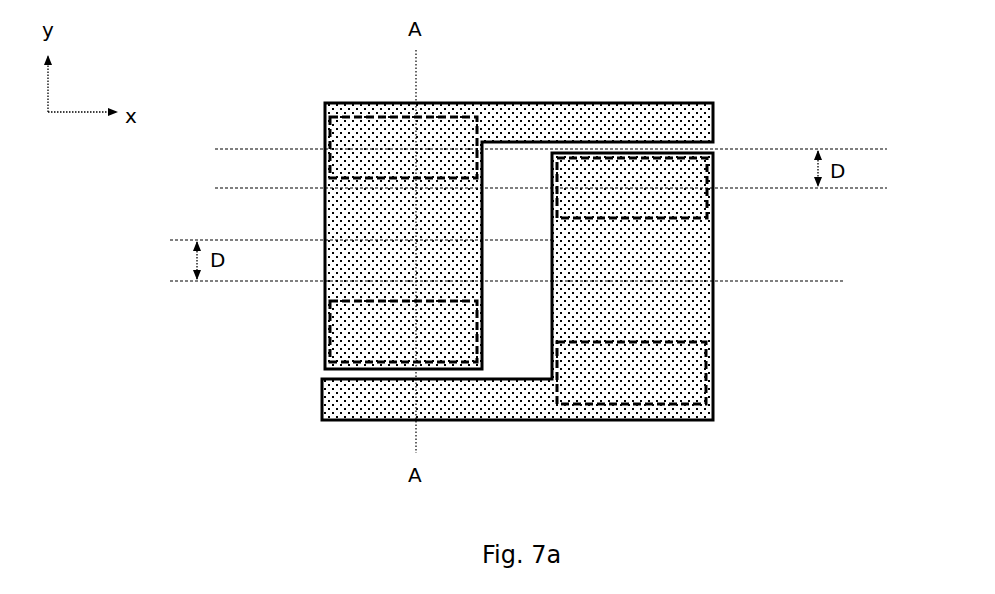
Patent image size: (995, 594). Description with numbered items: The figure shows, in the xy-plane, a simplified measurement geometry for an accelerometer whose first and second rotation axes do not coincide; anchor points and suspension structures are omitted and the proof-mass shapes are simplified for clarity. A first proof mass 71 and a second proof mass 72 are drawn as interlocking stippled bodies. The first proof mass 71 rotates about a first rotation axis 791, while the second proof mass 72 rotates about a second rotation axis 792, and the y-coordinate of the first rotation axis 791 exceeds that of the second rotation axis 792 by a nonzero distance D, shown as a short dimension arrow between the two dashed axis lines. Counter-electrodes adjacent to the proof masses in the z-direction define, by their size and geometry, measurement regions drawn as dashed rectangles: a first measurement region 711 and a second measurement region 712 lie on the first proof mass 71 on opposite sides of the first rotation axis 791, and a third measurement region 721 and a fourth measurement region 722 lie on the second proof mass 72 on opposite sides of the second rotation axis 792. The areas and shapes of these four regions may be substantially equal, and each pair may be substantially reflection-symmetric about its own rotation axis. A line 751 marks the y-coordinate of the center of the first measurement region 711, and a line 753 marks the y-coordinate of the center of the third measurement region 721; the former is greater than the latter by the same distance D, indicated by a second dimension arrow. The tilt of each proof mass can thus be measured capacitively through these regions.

The first proof mass 71 is at (447, 100).
The second proof mass 72 is at (633, 423).
The first measurement region 711 is at (372, 128).
The second measurement region 712 is at (395, 337).
The third measurement region 721 is at (658, 202).
The fourth measurement region 722 is at (643, 377).
The line illustrating y-coordinate of center of first measurement region 751 is at (576, 151).
The line illustrating y-coordinate of center of third measurement region 753 is at (576, 191).
The first rotation axis 791 is at (338, 237).
The second rotation axis 792 is at (505, 279).